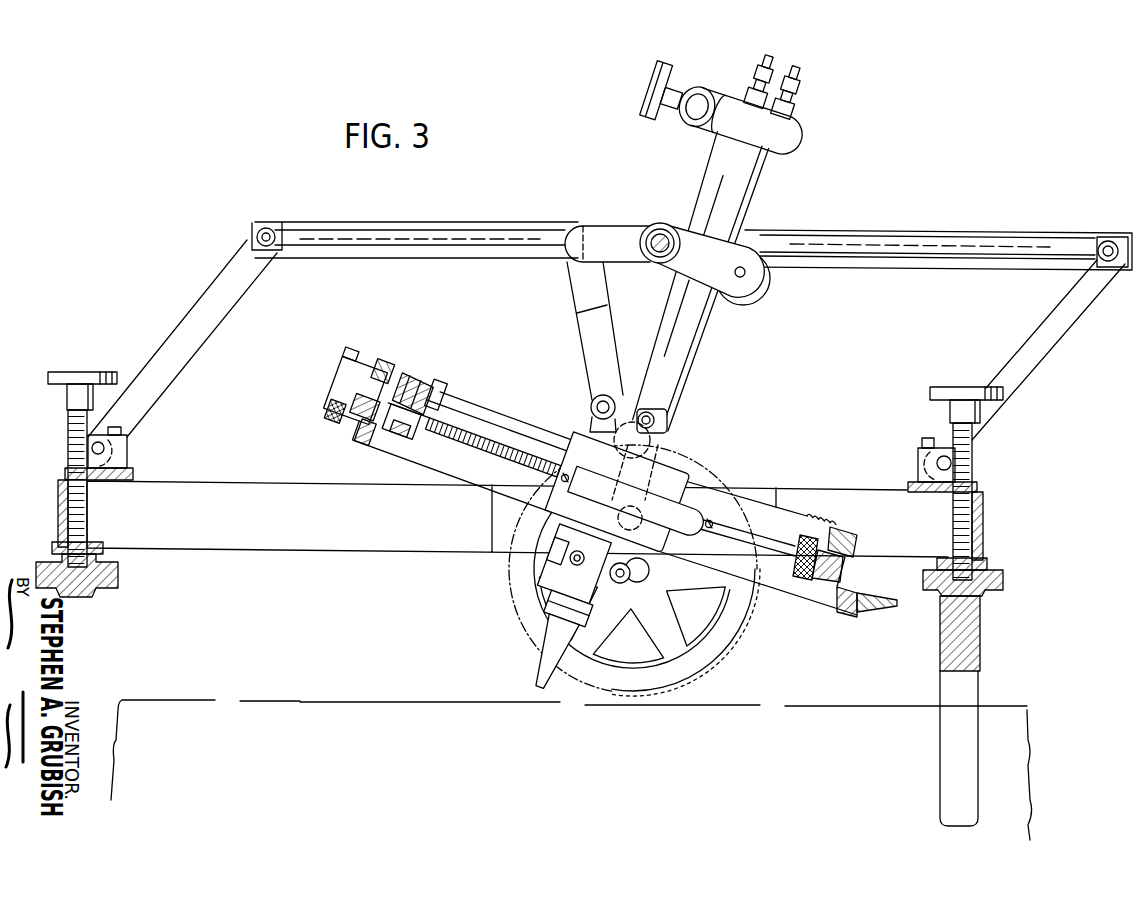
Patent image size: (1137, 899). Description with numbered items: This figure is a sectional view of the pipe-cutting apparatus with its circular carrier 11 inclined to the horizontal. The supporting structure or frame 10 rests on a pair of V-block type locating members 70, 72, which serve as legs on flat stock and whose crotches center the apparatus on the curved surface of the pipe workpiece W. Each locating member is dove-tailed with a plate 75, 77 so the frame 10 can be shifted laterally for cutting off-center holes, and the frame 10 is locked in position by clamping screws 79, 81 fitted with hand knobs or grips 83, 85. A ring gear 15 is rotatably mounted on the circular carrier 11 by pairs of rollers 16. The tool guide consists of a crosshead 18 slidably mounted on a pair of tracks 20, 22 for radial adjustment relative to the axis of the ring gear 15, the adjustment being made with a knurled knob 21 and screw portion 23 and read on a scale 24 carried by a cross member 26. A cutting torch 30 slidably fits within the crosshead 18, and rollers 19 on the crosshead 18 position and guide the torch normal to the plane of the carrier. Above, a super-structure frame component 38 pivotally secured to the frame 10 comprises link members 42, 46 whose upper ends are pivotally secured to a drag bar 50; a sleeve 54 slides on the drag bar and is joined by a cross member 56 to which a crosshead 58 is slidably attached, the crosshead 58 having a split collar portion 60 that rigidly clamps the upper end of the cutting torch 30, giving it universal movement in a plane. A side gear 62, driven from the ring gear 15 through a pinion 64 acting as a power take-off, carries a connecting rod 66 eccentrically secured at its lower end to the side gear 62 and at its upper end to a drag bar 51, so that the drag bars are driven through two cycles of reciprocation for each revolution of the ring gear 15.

The supporting structure or frame 10 is at (280, 547).
The circular carrier 11 is at (328, 409).
The ring gear 15 is at (410, 380).
The rollers 16 is at (380, 368).
The crosshead 18 is at (680, 505).
The rollers 19 is at (597, 395).
The track 20 is at (758, 547).
The knurled knob 21 is at (795, 575).
The track 22 is at (565, 482).
The screw portion 23 is at (473, 447).
The scale 24 is at (477, 430).
The cross member 26 is at (753, 532).
The cutting torch 30 is at (752, 189).
The super-structure frame component 38 is at (473, 222).
The link member 42 is at (160, 352).
The link member 46 is at (1045, 357).
The drag bar 50 is at (855, 240).
The drag bar 51 is at (963, 233).
The sleeve 54 is at (618, 232).
The cross member 56 is at (663, 241).
The crosshead 58 is at (712, 295).
The split collar portion 60 is at (755, 280).
The side gear 62 is at (733, 640).
The pinion 64 is at (577, 407).
The connecting rod 66 is at (588, 330).
The V-block type locating member 70 is at (93, 593).
The V-block type locating member 72 is at (975, 622).
The plate 75 is at (97, 560).
The plate 77 is at (1000, 577).
The clamping screw 79 is at (72, 432).
The clamping screw 81 is at (972, 467).
The hand knob or grip 83 is at (60, 372).
The hand knob or grip 85 is at (950, 388).
The pipe workpiece W is at (300, 698).